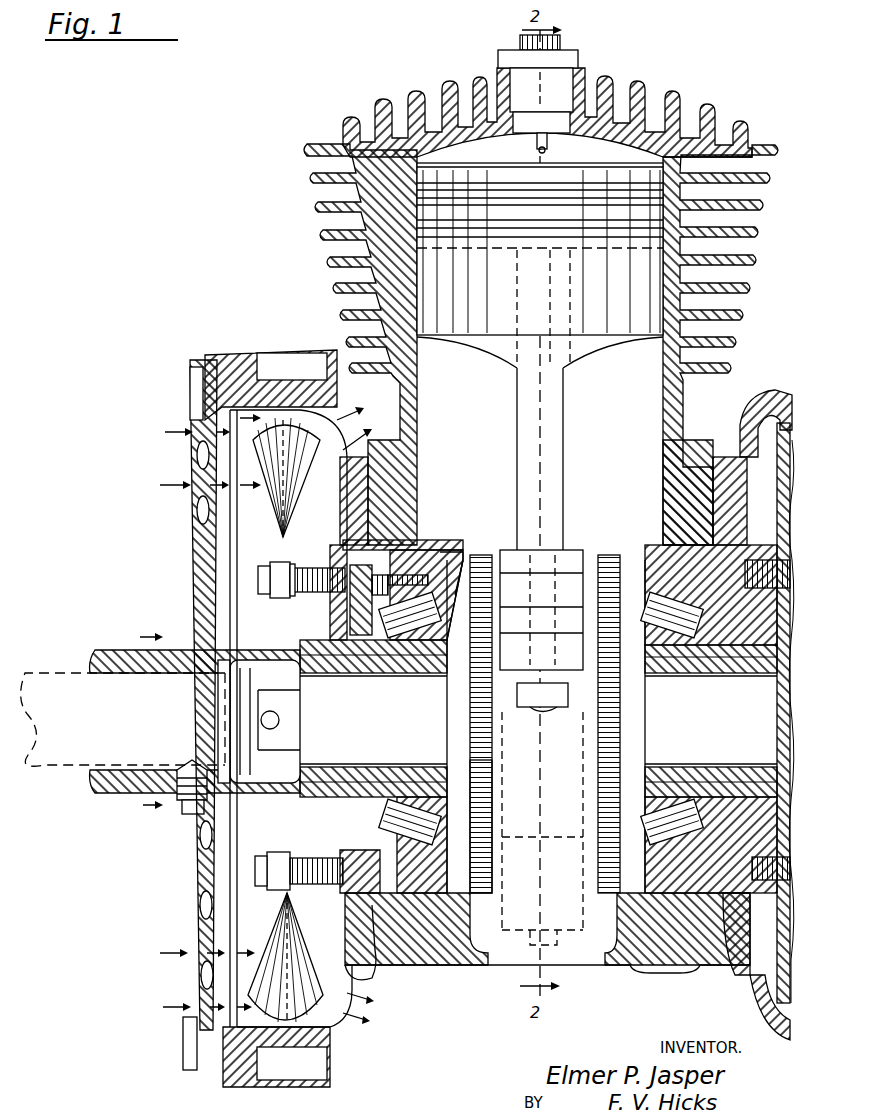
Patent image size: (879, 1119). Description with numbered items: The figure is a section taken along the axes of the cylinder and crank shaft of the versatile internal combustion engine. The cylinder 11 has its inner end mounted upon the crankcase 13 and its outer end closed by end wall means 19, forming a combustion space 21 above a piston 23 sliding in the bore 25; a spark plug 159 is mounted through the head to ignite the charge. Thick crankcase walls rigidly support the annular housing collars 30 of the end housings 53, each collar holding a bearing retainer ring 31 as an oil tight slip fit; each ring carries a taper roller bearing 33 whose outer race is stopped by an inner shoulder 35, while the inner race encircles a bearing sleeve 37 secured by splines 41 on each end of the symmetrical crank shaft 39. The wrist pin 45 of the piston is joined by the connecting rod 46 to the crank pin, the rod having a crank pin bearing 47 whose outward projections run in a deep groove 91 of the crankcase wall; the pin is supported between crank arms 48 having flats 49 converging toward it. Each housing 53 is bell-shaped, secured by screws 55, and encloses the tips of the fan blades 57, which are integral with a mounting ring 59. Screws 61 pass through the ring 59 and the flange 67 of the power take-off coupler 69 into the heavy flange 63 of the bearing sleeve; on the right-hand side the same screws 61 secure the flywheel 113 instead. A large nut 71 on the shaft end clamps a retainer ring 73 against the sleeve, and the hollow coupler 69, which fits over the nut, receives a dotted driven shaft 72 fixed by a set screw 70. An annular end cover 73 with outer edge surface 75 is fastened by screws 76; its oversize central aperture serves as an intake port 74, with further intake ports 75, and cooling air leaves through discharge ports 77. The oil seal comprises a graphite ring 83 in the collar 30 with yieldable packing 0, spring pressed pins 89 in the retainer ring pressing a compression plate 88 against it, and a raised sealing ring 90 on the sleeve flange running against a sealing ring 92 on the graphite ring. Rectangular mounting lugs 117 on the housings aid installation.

The cylinder 11 is at (531, 306).
The crankcase 13 is at (554, 706).
The end wall means 19 is at (387, 153).
The combustion space 21 is at (600, 160).
The piston 23 is at (540, 279).
The bore 25 is at (418, 385).
The annular housing collar (neck) 30 is at (420, 548).
The bearing retainer ring 31 is at (442, 555).
The taper roller bearing 33 is at (407, 640).
The inner shoulder 35 is at (462, 560).
The bearing sleeve 37 is at (440, 660).
The crank shaft 39 is at (538, 718).
The splines 41 is at (353, 677).
The wrist pin 45 is at (600, 320).
The connecting rod 46 is at (548, 684).
The crank pin bearing 47 is at (540, 698).
The crank arms 48 is at (492, 790).
The flats 49 is at (492, 750).
The end housing 53 is at (512, 708).
The screws 55 is at (343, 905).
The fan blades 57 is at (283, 933).
The fan mounting ring 59 is at (280, 598).
The fan mounting screws 61 is at (517, 710).
The annular flange of bearing sleeve 63 is at (325, 533).
The annular flange of power take-off coupler 67 is at (290, 597).
The power take-off coupler 69 is at (186, 720).
The set screw 70 is at (190, 762).
The nut 71 is at (300, 723).
The driven shaft 72 is at (78, 672).
The end cover 73 is at (298, 752).
The intake port 74 is at (235, 737).
The intake ports 75 is at (200, 938).
The screws 76 is at (192, 1062).
The discharge ports 77 is at (360, 715).
The graphite ring 83 is at (361, 600).
The compression plate 88 is at (403, 549).
The spring pressed pins 89 is at (408, 593).
The sealing ring 90 is at (348, 606).
The deep groove 91 is at (585, 960).
The sealing ring 92 is at (368, 595).
The flywheel 113 is at (752, 412).
The mounting lugs 117 is at (290, 350).
The spark plug 159 is at (580, 60).
The yieldable packing 0 is at (395, 962).